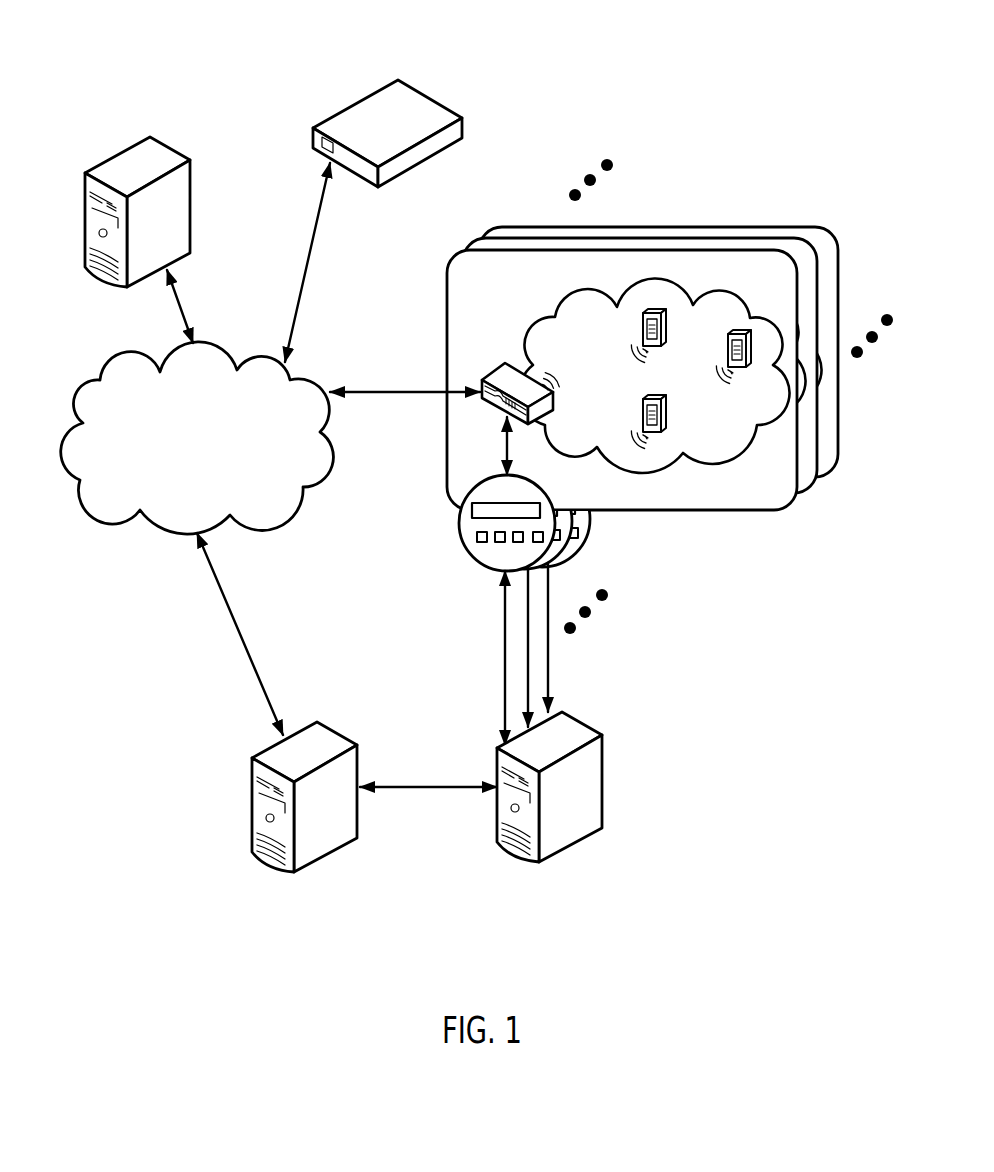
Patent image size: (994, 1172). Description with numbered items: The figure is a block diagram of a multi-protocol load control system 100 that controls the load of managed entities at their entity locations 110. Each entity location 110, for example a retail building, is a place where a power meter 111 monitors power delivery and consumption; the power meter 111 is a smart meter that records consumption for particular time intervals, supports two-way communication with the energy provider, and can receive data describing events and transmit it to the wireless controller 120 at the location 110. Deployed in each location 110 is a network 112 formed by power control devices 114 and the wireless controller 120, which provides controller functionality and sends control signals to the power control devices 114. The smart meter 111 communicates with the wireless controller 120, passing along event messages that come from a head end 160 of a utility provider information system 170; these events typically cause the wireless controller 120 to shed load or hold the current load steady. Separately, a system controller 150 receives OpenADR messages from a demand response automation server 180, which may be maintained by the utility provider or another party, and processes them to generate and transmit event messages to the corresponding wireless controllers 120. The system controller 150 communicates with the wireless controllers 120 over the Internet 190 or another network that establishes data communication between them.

The multi-protocol load control system 100 is at (160, 110).
The entity location 110 is at (785, 204).
The power meter 111 is at (461, 549).
The network 112 is at (717, 460).
The power control devices 114 is at (700, 321).
The wireless controller 120 is at (482, 381).
The system controller 150 is at (415, 88).
The head end 160 is at (602, 748).
The utility provider information system 170 is at (337, 733).
The demand response automation server 180 is at (189, 161).
The Internet 190 is at (222, 350).